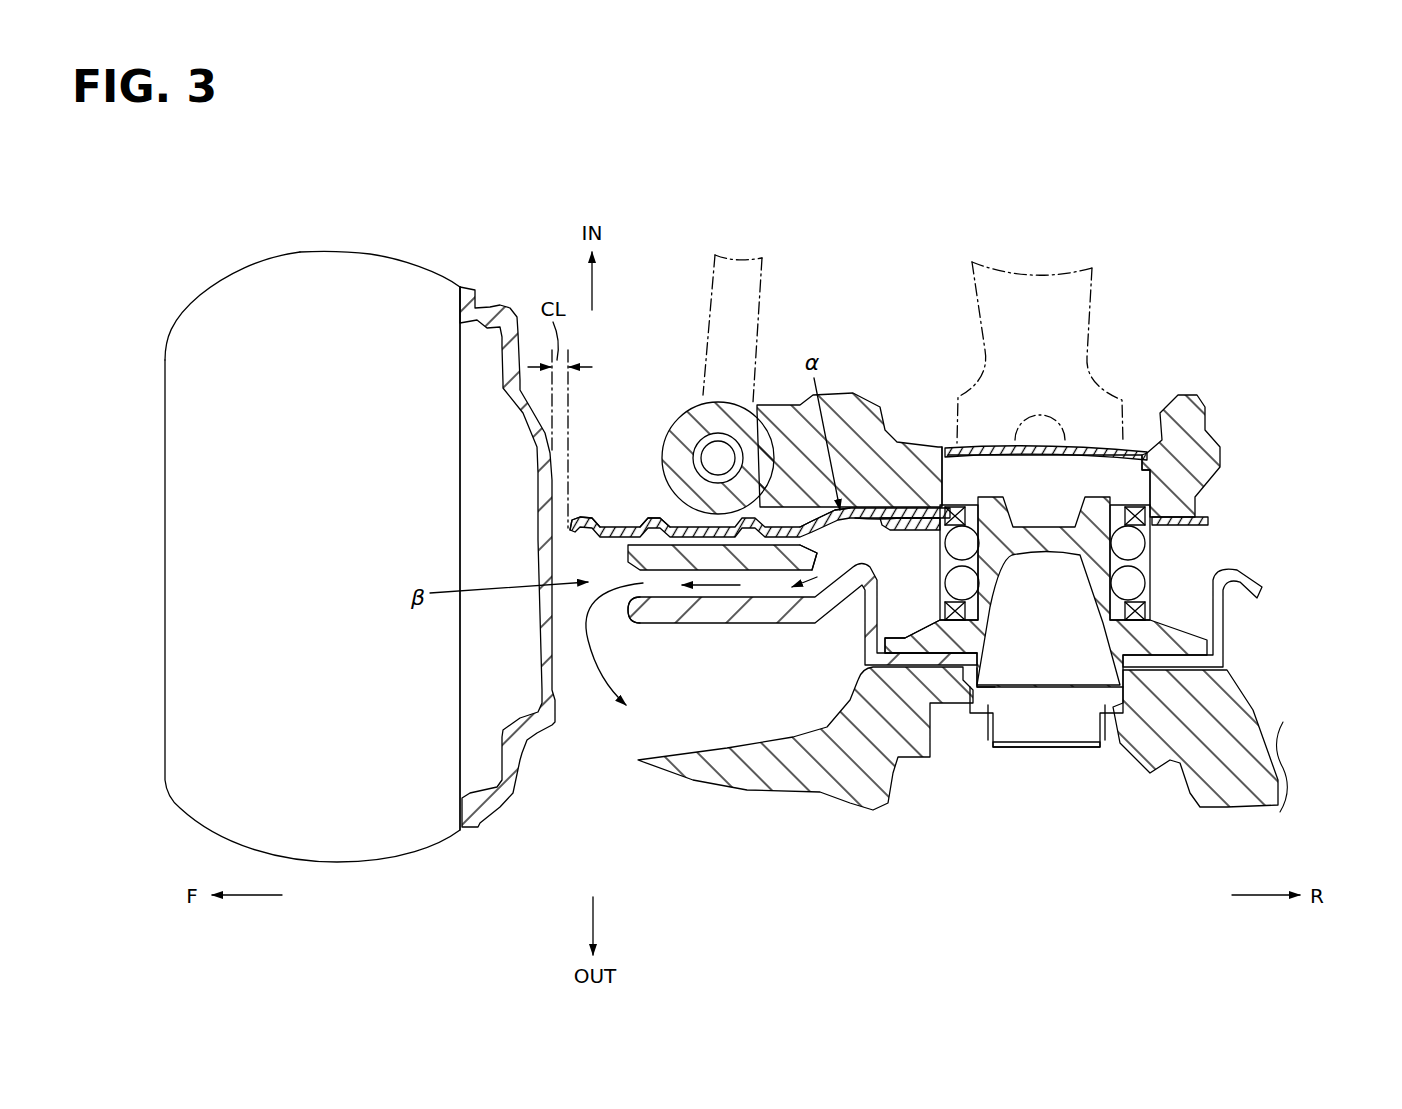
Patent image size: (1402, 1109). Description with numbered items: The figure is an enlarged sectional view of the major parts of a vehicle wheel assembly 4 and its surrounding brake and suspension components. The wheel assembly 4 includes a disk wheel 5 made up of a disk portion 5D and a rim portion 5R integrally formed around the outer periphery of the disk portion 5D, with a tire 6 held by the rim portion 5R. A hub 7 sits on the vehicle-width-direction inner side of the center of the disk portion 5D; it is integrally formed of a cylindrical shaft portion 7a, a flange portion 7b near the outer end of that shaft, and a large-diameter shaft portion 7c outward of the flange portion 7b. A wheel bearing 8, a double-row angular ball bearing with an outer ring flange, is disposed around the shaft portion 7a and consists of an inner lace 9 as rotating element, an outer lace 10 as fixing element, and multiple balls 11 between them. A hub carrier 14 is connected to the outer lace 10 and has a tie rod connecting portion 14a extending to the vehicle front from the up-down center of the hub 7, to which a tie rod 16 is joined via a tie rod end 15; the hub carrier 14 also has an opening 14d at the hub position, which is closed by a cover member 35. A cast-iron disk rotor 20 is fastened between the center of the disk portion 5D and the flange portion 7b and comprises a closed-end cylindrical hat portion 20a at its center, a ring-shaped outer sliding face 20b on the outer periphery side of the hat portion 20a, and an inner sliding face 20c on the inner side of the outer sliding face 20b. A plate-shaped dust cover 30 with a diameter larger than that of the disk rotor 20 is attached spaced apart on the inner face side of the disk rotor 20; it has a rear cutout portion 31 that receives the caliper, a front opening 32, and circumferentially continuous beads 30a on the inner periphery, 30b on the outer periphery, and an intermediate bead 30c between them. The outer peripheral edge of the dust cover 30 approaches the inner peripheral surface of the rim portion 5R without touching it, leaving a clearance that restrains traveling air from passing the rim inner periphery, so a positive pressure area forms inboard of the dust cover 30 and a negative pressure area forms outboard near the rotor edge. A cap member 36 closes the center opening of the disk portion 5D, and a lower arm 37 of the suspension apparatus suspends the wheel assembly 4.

The wheel assembly 4 is at (236, 258).
The tire 6 is at (343, 248).
The rim portion 5R is at (537, 472).
The wheel 5 is at (962, 766).
The disk portion 5D is at (837, 801).
The hub carrier 14 is at (915, 413).
The tie rod connecting portion 14a is at (664, 454).
The opening 14d is at (1143, 462).
The tie rod end 15 is at (718, 460).
The tie rod 16 is at (762, 298).
The lower arm 37 is at (972, 290).
The cover member 35 is at (1135, 448).
The cutout portion 31 is at (1208, 521).
The dust cover 30 is at (619, 522).
The bead 30a is at (820, 508).
The bead 30b is at (590, 536).
The intermediate bead 30c is at (645, 525).
The front opening 32 is at (872, 518).
The disk rotor 20 is at (757, 626).
The hat portion 20a is at (1223, 648).
The outer sliding face 20b is at (670, 625).
The inner sliding face 20c is at (773, 572).
The hub 7 is at (1046, 652).
The shaft portion 7a is at (997, 575).
The flange portion 7b is at (907, 637).
The large-diameter shaft portion 7c is at (974, 678).
The wheel bearing 8 is at (1140, 571).
The inner lace 9 is at (1105, 550).
The outer lace 10 is at (1157, 586).
The balls 11 is at (1120, 587).
The cap member 36 is at (1078, 760).